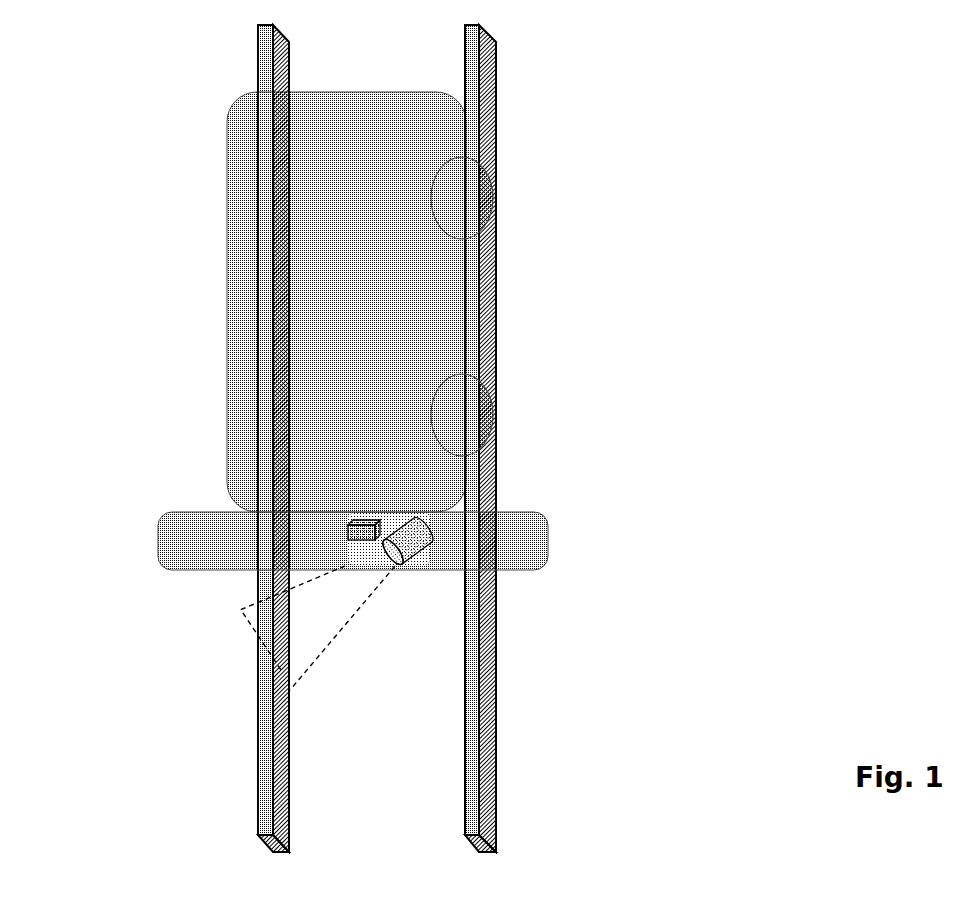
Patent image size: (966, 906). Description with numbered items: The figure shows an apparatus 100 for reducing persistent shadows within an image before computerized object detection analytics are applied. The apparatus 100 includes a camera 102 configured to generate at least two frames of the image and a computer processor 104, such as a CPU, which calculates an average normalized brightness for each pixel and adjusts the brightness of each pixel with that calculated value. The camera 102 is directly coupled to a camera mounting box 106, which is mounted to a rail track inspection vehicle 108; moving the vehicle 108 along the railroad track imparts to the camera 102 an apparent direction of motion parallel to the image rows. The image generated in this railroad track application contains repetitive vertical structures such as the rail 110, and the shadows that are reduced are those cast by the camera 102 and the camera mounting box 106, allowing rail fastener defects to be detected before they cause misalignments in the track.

The apparatus 100 is at (446, 544).
The camera 102 is at (420, 538).
The computer processor 104 is at (358, 533).
The camera mounting box 106 is at (238, 535).
The rail track inspection vehicle 108 is at (360, 235).
The rail 110 is at (282, 705).